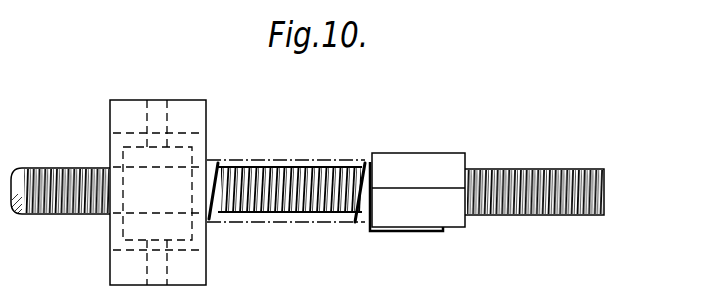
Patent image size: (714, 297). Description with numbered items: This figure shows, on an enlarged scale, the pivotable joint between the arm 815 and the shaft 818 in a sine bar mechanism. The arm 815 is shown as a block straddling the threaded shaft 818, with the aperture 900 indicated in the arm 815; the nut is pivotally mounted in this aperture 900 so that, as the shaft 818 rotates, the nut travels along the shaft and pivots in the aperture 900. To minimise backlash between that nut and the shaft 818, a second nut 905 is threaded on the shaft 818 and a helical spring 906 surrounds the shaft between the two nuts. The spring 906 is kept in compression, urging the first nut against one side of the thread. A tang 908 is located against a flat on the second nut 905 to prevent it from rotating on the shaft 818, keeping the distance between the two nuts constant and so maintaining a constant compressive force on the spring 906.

The shaft 818 is at (50, 169).
The arm 815 is at (130, 105).
The aperture 900 is at (208, 150).
The helical spring 906 is at (360, 162).
The second nut 905 is at (428, 165).
The tang 908 is at (420, 233).